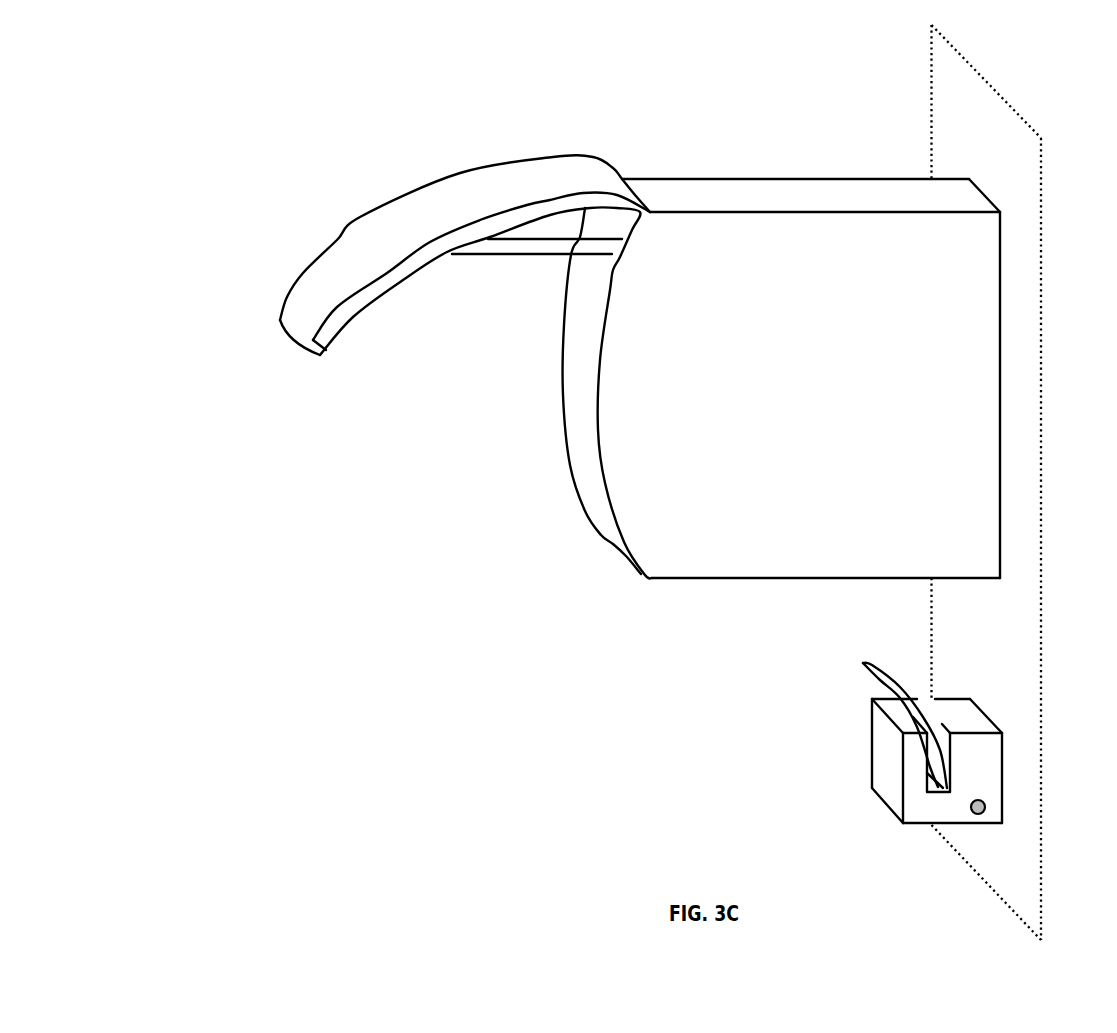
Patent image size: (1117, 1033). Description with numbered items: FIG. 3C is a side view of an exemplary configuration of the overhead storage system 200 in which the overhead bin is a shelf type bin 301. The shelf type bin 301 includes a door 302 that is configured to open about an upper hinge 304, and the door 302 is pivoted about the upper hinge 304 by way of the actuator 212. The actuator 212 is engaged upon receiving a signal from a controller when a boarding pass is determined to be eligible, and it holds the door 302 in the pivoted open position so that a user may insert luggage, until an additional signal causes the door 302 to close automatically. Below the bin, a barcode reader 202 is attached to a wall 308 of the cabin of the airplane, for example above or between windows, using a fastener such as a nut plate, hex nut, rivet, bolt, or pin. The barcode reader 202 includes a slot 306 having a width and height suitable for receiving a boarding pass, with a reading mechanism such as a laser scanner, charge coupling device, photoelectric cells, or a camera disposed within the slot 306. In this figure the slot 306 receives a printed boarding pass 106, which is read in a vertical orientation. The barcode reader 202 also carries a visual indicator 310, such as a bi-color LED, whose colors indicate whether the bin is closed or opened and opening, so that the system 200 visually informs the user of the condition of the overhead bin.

The system 200 is at (188, 153).
The shelf type bin 301 is at (792, 143).
The upper hinge 304 is at (637, 193).
The door 302 is at (277, 300).
The actuator 212 is at (515, 258).
The barcode reader 202 is at (800, 757).
The printed boarding pass 106 is at (862, 673).
The slot 306 is at (923, 783).
The visual indicator 310 is at (967, 808).
The wall 308 is at (1047, 670).